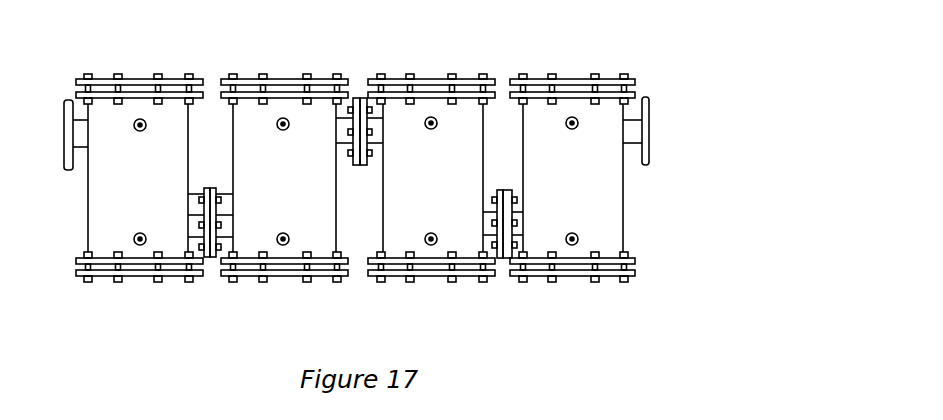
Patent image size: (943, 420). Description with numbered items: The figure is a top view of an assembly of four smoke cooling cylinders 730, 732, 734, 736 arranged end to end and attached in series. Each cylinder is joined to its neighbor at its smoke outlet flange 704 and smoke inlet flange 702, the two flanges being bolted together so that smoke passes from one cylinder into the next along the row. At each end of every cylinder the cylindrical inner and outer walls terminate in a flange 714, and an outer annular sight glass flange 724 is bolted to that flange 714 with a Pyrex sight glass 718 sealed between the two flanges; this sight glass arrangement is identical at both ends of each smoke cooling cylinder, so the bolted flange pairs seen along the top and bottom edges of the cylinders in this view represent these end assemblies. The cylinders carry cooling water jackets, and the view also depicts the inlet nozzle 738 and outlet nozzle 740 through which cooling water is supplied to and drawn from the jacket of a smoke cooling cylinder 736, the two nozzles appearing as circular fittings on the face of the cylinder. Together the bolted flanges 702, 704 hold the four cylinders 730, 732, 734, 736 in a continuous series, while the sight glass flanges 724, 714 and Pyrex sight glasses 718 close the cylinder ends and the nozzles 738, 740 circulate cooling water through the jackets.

The smoke inlet flange 702 is at (650, 112).
The smoke outlet flange 704 is at (506, 262).
The flange 714 is at (636, 92).
The Pyrex sight glass 718 is at (580, 87).
The outer annular sight glass flange 724 is at (607, 76).
The smoke cooling cylinder 730 is at (612, 223).
The smoke cooling cylinder 732 is at (403, 240).
The smoke cooling cylinder 734 is at (252, 245).
The smoke cooling cylinder 736 is at (108, 248).
The inlet nozzle 738 is at (135, 129).
The outlet nozzle 740 is at (133, 238).